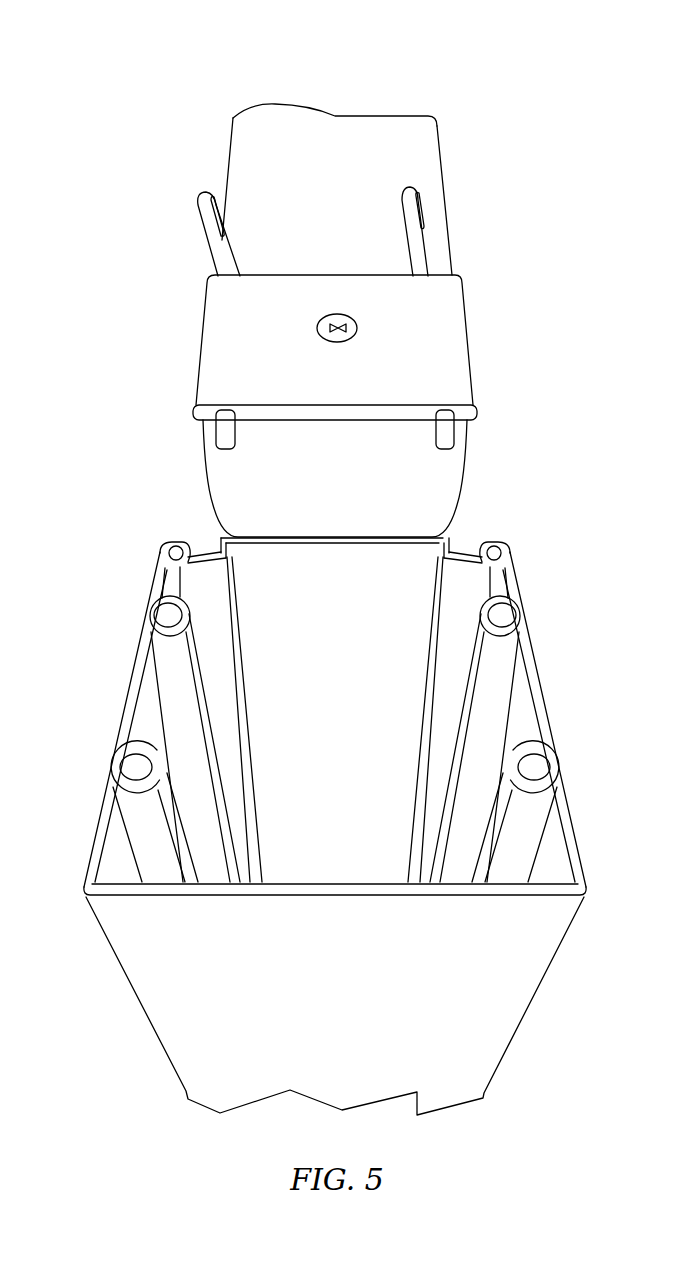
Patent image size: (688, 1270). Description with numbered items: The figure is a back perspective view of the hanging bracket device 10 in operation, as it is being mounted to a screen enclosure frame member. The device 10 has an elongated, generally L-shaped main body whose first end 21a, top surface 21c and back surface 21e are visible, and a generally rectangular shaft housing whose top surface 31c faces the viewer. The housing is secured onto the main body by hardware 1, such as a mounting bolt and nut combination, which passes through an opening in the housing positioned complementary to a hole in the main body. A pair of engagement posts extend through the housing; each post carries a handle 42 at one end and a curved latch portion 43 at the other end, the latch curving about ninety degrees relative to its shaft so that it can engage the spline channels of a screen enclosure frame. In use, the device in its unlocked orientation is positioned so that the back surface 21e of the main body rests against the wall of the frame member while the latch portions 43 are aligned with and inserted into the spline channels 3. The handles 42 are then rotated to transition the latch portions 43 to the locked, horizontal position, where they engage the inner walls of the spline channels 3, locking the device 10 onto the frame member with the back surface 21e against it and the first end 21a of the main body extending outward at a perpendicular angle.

The device 10 is at (122, 78).
The first end 21a is at (353, 116).
The top surface 21c is at (253, 133).
The handle 42 is at (195, 210).
The top surface 31c is at (218, 355).
The hardware 1 is at (357, 329).
The curved latch portion 43 is at (211, 432).
The back surface 21e is at (465, 480).
The spline channels 3 is at (178, 555).